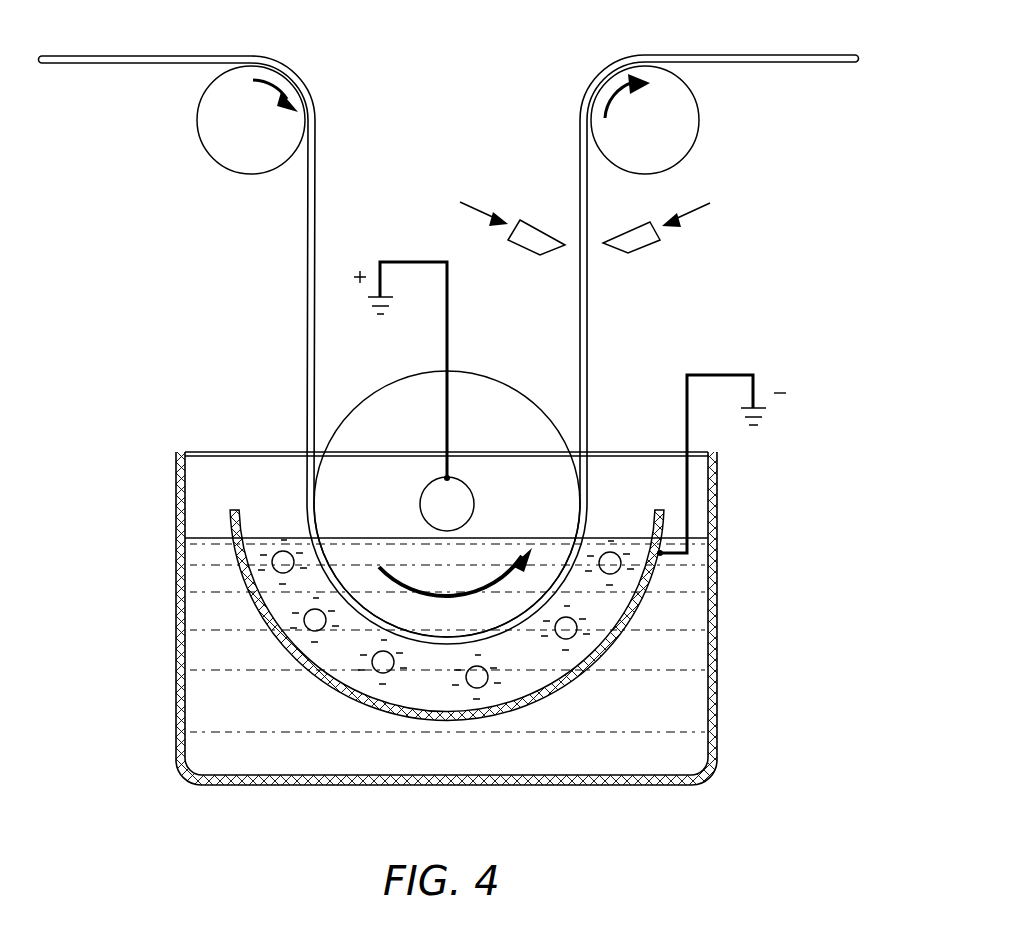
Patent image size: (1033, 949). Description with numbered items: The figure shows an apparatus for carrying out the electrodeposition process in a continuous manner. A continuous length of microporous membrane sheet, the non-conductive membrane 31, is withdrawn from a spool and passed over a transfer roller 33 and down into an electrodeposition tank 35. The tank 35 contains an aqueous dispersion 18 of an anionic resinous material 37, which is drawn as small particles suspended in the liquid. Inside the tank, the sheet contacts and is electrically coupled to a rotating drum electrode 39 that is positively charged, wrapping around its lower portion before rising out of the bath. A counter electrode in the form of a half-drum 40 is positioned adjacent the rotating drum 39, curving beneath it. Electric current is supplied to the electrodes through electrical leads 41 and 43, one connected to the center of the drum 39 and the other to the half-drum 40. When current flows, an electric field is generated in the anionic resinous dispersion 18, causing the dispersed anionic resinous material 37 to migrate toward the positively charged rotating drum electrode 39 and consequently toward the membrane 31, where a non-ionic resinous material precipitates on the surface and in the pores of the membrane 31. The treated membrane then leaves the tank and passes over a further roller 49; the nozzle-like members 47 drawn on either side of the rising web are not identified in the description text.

The aqueous dispersion 18 is at (205, 692).
The non-conductive membrane 31 is at (140, 53).
The transfer roller 33 is at (210, 153).
The electrodeposition tank 35 is at (176, 618).
The resinous material 37 is at (283, 551).
The rotating drum electrode 39 is at (371, 394).
The half-drum counter electrode 40 is at (560, 692).
The electrical lead 41 is at (449, 341).
The electrical lead 43 is at (687, 428).
The nozzles / spray heads 47 is at (650, 248).
The roller 49 is at (700, 138).